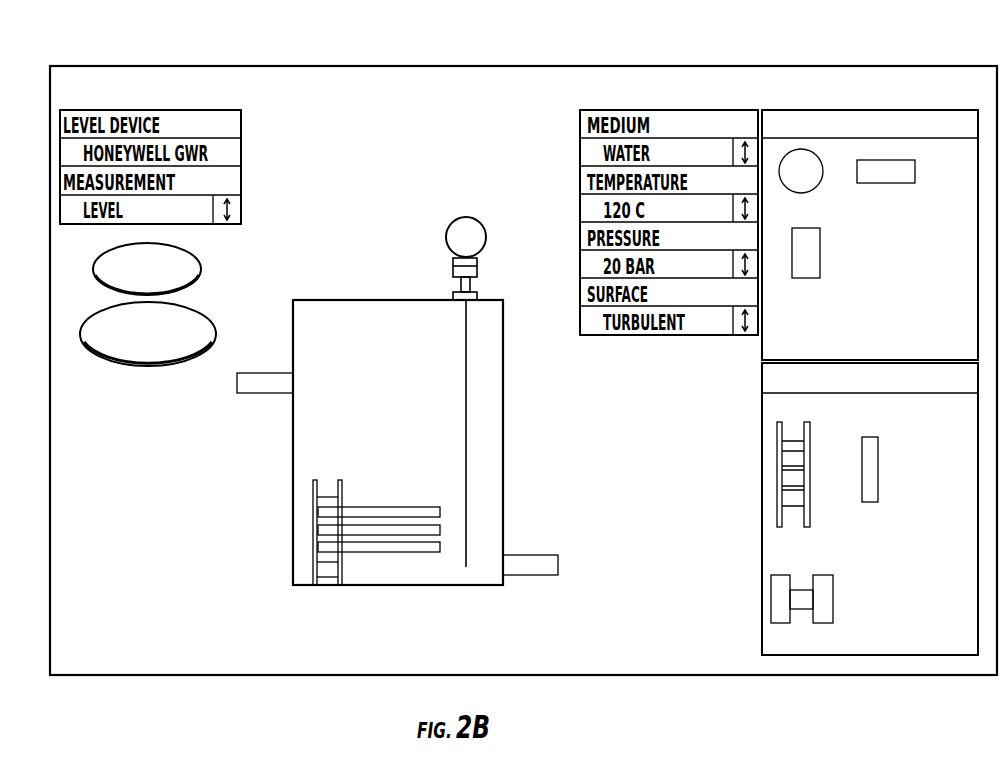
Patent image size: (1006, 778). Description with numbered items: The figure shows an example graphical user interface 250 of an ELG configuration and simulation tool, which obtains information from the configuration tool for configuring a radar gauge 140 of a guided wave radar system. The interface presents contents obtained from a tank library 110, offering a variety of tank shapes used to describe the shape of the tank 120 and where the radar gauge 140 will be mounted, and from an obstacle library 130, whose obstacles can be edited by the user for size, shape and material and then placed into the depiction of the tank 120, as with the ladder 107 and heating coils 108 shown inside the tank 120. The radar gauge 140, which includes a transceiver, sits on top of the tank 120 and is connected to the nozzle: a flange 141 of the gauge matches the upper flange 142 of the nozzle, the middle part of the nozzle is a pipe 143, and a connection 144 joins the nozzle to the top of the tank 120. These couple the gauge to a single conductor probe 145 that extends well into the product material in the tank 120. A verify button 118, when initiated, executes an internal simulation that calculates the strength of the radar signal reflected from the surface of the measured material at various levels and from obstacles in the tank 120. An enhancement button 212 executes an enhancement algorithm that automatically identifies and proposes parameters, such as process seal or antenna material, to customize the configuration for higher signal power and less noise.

The graphical user interface 250 is at (523, 353).
The tank library 110 is at (870, 235).
The obstacle library 130 is at (870, 509).
The verify button 118 is at (202, 270).
The enhancement button 212 is at (217, 334).
The tank 120 is at (503, 458).
The radar gauge 140 is at (432, 217).
The flange 141 is at (477, 262).
The upper flange of the nozzle 142 is at (477, 271).
The middle part of the nozzle 143 is at (470, 284).
The connection between the nozzle and the top of the tank 144 is at (477, 296).
The single conductor probe 145 is at (465, 460).
The heating coils 108 is at (318, 547).
The ladder 107 is at (312, 572).